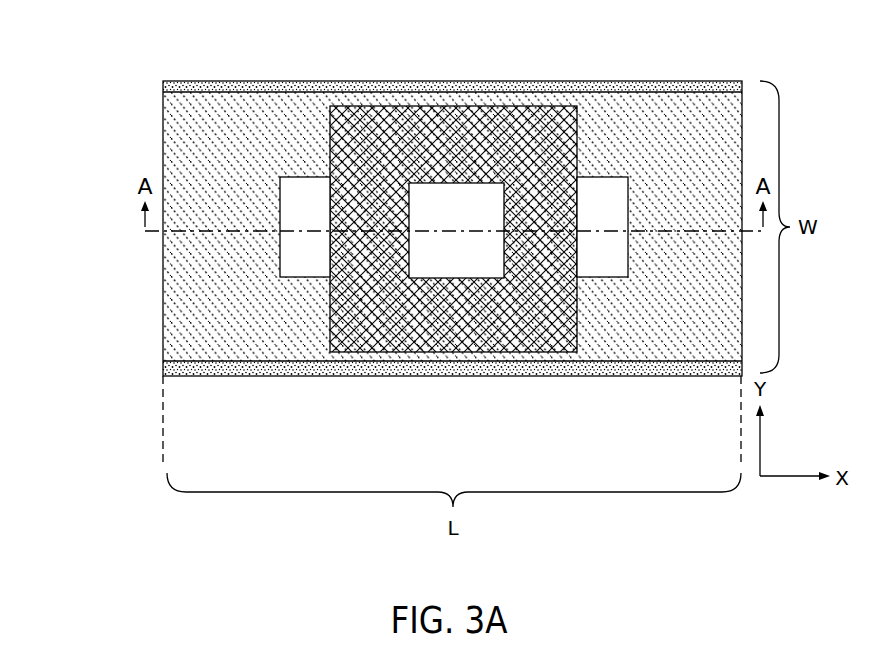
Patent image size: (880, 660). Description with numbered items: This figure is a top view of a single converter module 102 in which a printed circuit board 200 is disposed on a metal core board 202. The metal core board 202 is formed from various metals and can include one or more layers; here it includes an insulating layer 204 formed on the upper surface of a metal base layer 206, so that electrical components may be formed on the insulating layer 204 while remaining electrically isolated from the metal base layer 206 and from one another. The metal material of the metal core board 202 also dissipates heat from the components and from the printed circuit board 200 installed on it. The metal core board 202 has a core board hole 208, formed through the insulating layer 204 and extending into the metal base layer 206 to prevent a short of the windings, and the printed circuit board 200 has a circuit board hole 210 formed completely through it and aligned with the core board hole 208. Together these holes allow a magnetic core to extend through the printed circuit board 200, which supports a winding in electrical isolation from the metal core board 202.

The converter module 102 is at (394, 231).
The printed circuit board 200 is at (382, 290).
The metal core board 202 is at (112, 75).
The insulating layer 204 is at (667, 200).
The metal base layer 206 is at (608, 367).
The core board hole 208 is at (282, 222).
The circuit board hole 210 is at (428, 200).